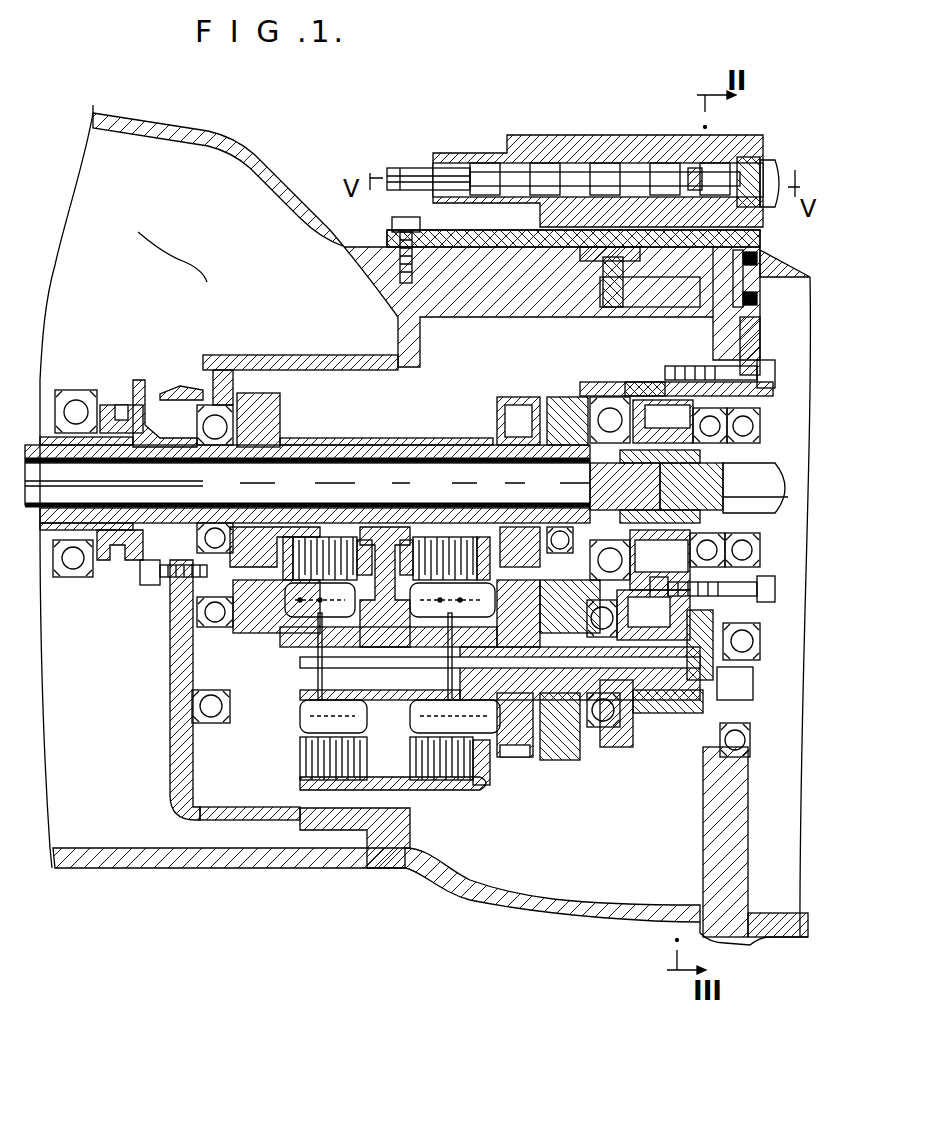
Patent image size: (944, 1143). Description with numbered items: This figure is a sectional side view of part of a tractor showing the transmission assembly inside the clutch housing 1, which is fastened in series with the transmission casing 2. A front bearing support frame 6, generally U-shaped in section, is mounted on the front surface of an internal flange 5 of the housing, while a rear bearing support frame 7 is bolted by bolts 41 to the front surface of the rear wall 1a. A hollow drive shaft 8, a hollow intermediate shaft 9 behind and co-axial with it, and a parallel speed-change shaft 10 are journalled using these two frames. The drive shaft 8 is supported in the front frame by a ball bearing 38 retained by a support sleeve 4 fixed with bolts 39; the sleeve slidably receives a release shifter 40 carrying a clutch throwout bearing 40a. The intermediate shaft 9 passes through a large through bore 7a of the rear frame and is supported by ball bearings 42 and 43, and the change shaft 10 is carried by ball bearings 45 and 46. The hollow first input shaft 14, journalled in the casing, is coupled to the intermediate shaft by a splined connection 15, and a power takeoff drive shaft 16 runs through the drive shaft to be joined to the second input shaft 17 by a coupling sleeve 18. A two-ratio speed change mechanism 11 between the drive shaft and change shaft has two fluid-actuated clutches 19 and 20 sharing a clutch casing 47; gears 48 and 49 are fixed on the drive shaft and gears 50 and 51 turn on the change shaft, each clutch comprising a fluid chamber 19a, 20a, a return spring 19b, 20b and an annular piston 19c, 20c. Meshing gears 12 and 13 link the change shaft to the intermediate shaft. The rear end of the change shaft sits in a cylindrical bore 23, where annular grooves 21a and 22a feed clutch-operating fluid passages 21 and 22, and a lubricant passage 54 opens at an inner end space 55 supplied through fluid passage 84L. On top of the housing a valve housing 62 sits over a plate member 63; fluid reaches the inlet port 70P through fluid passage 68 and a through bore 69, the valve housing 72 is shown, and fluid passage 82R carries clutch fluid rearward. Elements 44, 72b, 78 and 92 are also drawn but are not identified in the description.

The clutch housing 1 is at (455, 882).
The rear wall of the clutch housing 1a is at (745, 820).
The transmission casing 2 is at (760, 946).
The support sleeve 4 is at (85, 578).
The internal flange 5 is at (402, 356).
The front bearing support frame 6 is at (220, 356).
The rear bearing support frame 7 is at (605, 382).
The large through bore 7a is at (635, 382).
The hollow drive shaft 8 is at (330, 445).
The hollow intermediate shaft 9 is at (650, 436).
The speed-change shaft 10 is at (220, 700).
The two-ratio speed change mechanism 11 is at (365, 795).
The gear 12 is at (563, 760).
The gear 13 is at (560, 397).
The first input shaft 14 is at (770, 462).
The splined connection 15 is at (724, 485).
The power takeoff drive shaft 16 is at (450, 438).
The second input shaft 17 is at (760, 520).
The coupling sleeve 18 is at (635, 560).
The fluid-actuated clutch 19 is at (483, 537).
The fluid chamber 19a is at (418, 537).
The return spring 19b is at (450, 700).
The annular piston 19c is at (418, 785).
The fluid-actuated clutch 20 is at (298, 527).
The fluid chamber 20a is at (400, 620).
The return spring 20b is at (305, 633).
The annular piston 20c is at (267, 790).
The clutch-operating fluid passage 21 is at (392, 637).
The annular groove 21a is at (670, 713).
The clutch-operating fluid passage 22 is at (380, 693).
The annular groove 22a is at (633, 720).
The cylindrical bore 23 is at (620, 610).
The ball bearing 38 is at (307, 484).
The bolts 39 is at (155, 586).
The release shifter 40 is at (145, 398).
The clutch throwout bearing 40a is at (85, 390).
The bolts 41 is at (672, 368).
The ball bearing 42 is at (605, 398).
The ball bearing 43 is at (757, 362).
The bearing 44 is at (558, 527).
The ball bearing 45 is at (195, 710).
The ball bearing 46 is at (603, 727).
The clutch casing 47 is at (392, 527).
The gear 48 is at (512, 397).
The gear 49 is at (258, 393).
The gear 50 is at (513, 757).
The gear 51 is at (210, 800).
The lubricant passage 54 is at (515, 593).
The inner end space 55 is at (717, 690).
The valve housing 62 is at (580, 135).
The plate member 63 is at (547, 262).
The fluid passage 68 is at (623, 270).
The through bore 69 is at (595, 250).
The inlet port 70P is at (695, 188).
The valve housing 72 is at (600, 168).
The spool end 72b is at (405, 170).
The end cap 78 is at (740, 157).
The fluid passage 82R is at (757, 257).
The fluid passage 84L is at (745, 641).
The bearing 92 is at (752, 740).